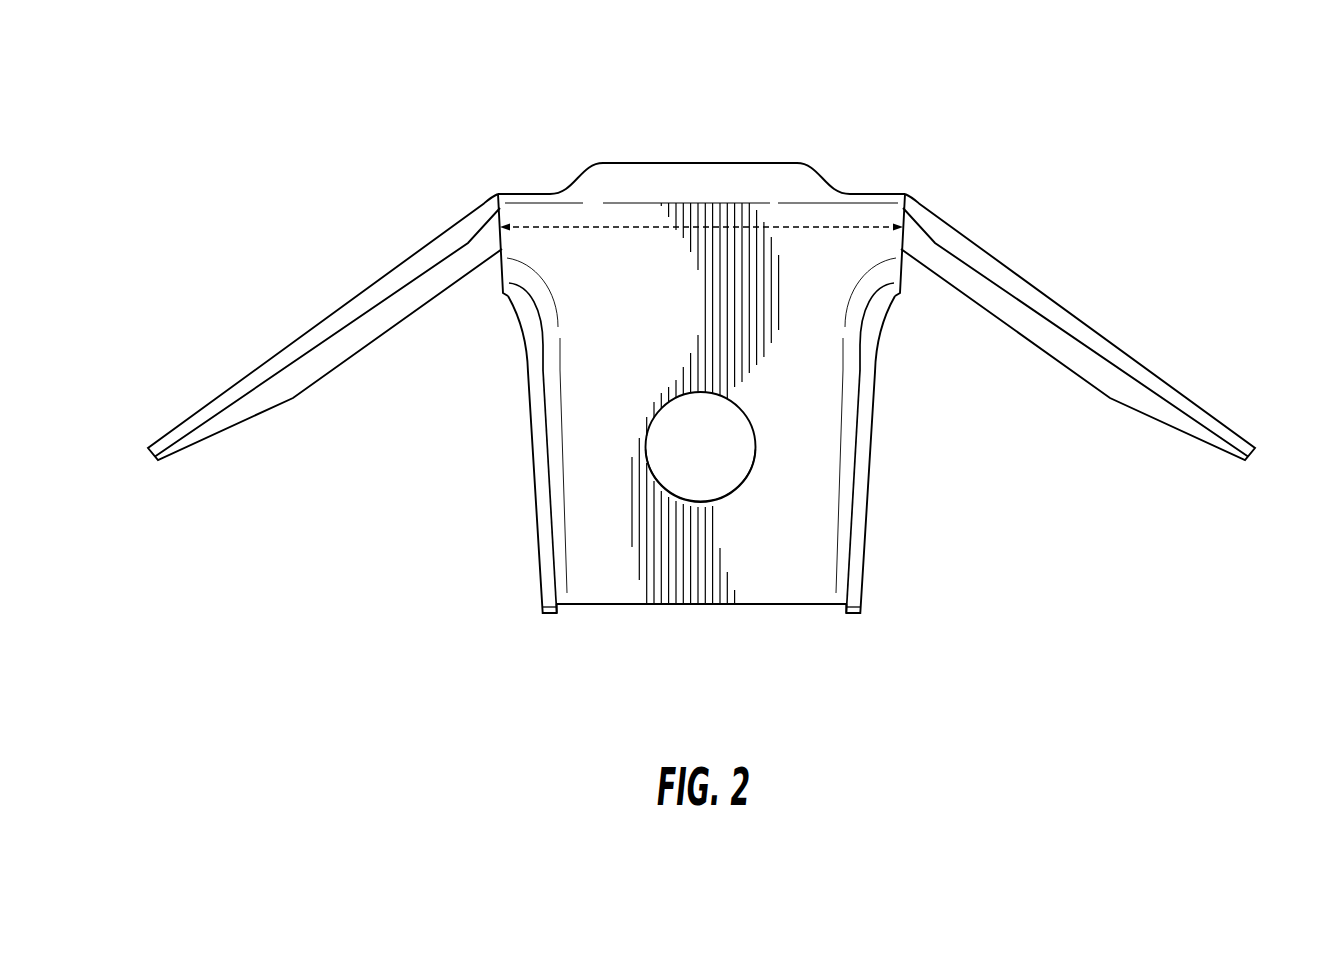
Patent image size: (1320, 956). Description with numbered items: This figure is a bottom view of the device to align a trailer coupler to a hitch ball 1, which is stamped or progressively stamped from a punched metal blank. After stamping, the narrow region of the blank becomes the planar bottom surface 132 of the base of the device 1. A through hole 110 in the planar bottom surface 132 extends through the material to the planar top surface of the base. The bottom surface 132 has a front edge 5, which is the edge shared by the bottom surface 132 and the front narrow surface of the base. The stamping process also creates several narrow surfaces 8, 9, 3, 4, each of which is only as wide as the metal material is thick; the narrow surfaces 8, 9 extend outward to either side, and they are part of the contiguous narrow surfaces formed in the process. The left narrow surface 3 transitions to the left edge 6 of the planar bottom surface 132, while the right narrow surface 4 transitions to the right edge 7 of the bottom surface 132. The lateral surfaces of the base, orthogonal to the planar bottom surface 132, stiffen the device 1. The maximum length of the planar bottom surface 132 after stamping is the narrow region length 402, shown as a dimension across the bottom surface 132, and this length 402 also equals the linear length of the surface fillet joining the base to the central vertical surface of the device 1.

The device to align a trailer coupler to a hitch ball 1 is at (466, 141).
The left narrow surface 3 is at (545, 588).
The right narrow surface 4 is at (858, 588).
The front edge 5 is at (728, 605).
The left edge 6 is at (500, 270).
The right edge 7 is at (900, 278).
The narrow surface 8 is at (242, 392).
The narrow surface 9 is at (1157, 385).
The through hole 110 is at (707, 468).
The planar bottom surface 132 is at (616, 560).
The narrow region length 402 is at (862, 227).